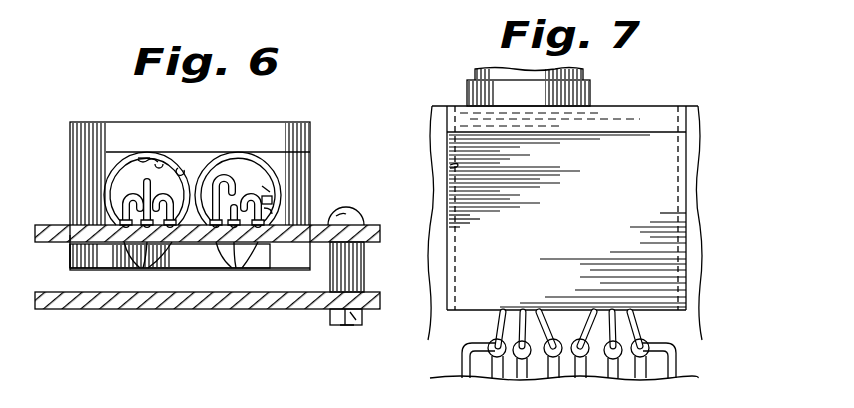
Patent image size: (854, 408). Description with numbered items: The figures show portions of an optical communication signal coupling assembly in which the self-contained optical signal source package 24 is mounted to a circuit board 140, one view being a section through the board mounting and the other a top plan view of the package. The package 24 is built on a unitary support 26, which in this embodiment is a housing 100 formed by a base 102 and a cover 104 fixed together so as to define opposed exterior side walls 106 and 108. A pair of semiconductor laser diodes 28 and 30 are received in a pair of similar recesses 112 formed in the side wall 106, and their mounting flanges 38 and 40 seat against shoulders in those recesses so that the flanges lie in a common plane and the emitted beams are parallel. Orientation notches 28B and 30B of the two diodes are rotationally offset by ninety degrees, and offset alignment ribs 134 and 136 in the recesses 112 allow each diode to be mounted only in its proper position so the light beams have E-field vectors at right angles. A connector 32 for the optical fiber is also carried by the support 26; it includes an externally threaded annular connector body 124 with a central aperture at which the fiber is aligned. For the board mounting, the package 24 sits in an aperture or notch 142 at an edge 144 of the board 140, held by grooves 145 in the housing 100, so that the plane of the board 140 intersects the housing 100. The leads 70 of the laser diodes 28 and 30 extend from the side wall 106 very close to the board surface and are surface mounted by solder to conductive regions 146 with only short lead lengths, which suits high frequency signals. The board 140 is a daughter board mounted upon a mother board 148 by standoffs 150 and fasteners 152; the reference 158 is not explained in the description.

In FIG. 6, the optical signal source package 24 is at (281, 98).
In FIG. 7, the optical signal source package 24 is at (656, 55).
In FIG. 6, the unitary support 26 is at (337, 114).
In FIG. 7, the unitary support 26 is at (691, 140).
In FIG. 6, the semiconductor laser diode 28 is at (128, 160).
In FIG. 6, the orientation notch 28B is at (148, 162).
In FIG. 6, the semiconductor laser diode 30 is at (248, 162).
In FIG. 6, the orientation notch 30B is at (272, 200).
In FIG. 7, the connector 32 is at (582, 74).
In FIG. 6, the mounting flange 38 is at (125, 185).
In FIG. 6, the mounting flange 40 is at (268, 190).
In FIG. 6, the leads 70 is at (192, 235).
In FIG. 7, the leads 70 is at (512, 328).
In FIG. 6, the housing 100 is at (93, 120).
In FIG. 7, the housing 100 is at (686, 256).
In FIG. 6, the base 102 is at (186, 264).
In FIG. 7, the base 102 is at (460, 262).
In FIG. 7, the cover 104 is at (600, 116).
In FIG. 6, the side wall 106 is at (246, 270).
In FIG. 7, the side wall 106 is at (444, 314).
In FIG. 7, the side wall 108 is at (644, 108).
In FIG. 6, the recesses 112 is at (184, 168).
In FIG. 7, the connector body 124 is at (480, 74).
In FIG. 6, the alignment rib 134 is at (163, 166).
In FIG. 6, the alignment rib 136 is at (275, 214).
In FIG. 6, the circuit board 140 is at (66, 225).
In FIG. 7, the circuit board 140 is at (440, 346).
In FIG. 6, the notch 142 is at (82, 206).
In FIG. 7, the notch 142 is at (448, 166).
In FIG. 7, the edge 144 is at (688, 106).
In FIG. 6, the grooves 145 is at (320, 218).
In FIG. 7, the grooves 145 is at (444, 200).
In FIG. 7, the conductive regions 146 is at (552, 378).
In FIG. 6, the mother board 148 is at (90, 310).
In FIG. 6, the standoffs 150 is at (362, 262).
In FIG. 7, the standoffs 150 is at (406, 241).
In FIG. 6, the fasteners 152 is at (322, 322).
In FIG. 6, the mounting arrangement 158 is at (112, 351).
In FIG. 7, the mounting arrangement 158 is at (423, 371).